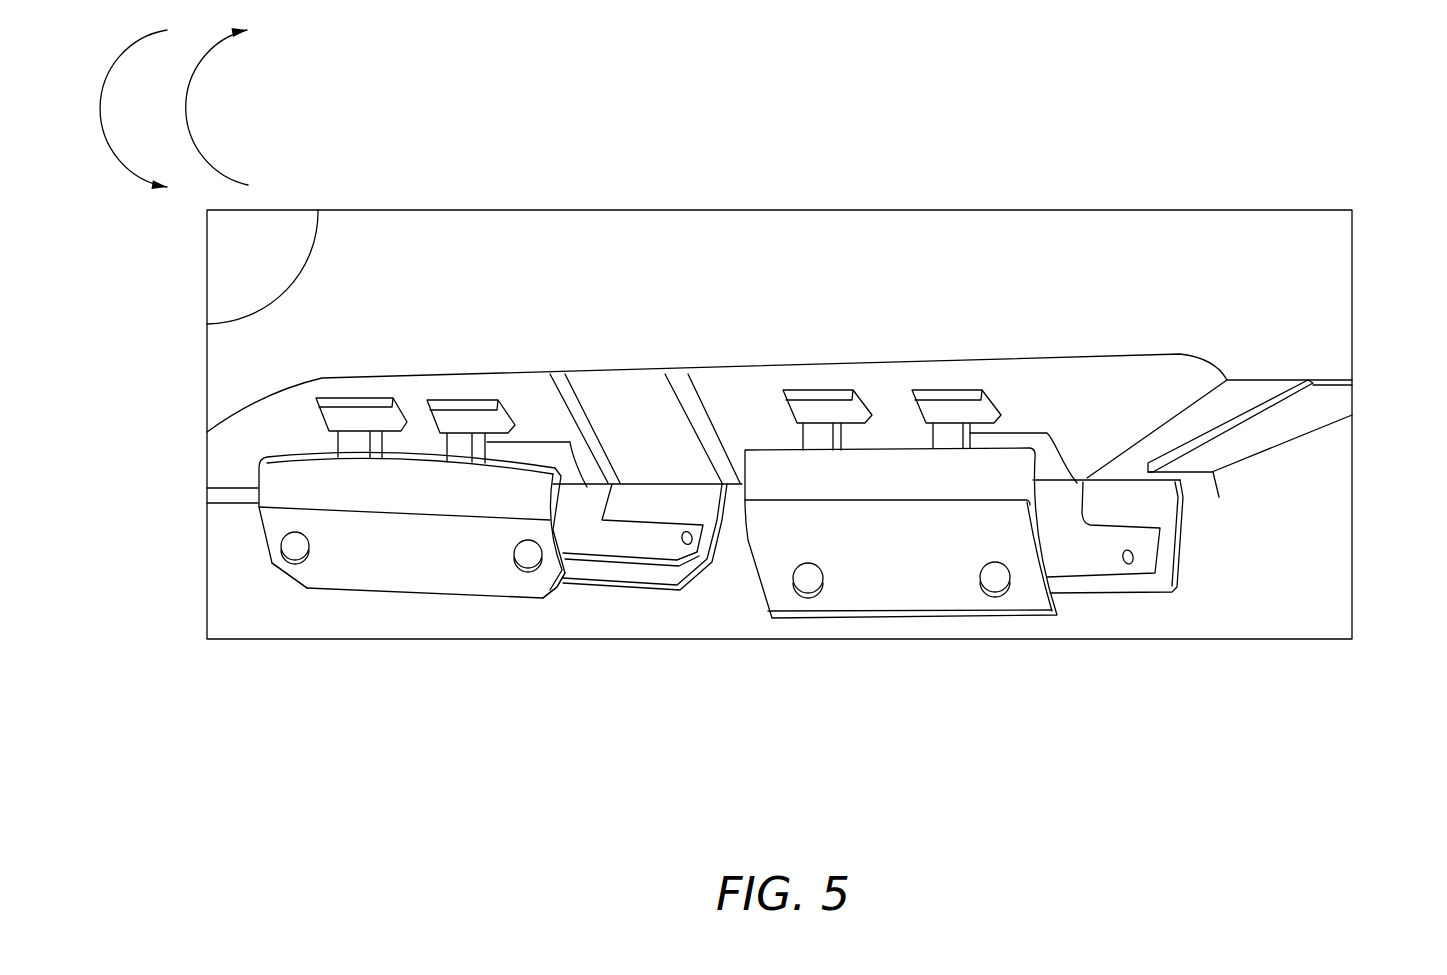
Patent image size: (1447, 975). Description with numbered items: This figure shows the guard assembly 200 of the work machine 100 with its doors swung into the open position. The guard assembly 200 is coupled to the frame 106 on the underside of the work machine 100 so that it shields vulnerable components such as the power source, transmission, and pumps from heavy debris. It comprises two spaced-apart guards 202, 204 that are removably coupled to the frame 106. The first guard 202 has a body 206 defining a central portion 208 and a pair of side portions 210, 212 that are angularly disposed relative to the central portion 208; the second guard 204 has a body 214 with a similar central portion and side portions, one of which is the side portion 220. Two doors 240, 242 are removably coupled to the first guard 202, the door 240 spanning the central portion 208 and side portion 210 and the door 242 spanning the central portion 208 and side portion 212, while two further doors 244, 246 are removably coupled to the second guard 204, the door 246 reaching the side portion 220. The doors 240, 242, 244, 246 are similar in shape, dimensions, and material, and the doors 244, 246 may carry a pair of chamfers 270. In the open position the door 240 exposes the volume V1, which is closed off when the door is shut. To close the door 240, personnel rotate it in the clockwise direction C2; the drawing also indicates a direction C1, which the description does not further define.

The work machine 100 is at (1276, 146).
The frame 106 is at (1065, 240).
The guard assembly 200 is at (1321, 440).
The guard 202 is at (1263, 433).
The guard 204 is at (233, 514).
The body 206 is at (1317, 398).
The central portion 208 is at (1241, 469).
The side portion 210 is at (1219, 497).
The side portion 212 is at (751, 428).
The body 214 is at (237, 453).
The side portion 220 is at (527, 400).
The door 240 is at (1163, 601).
The door 242 is at (885, 626).
The door 244 is at (422, 606).
The door 246 is at (658, 600).
The chamfers 270 is at (285, 580).
The volume V1 is at (570, 474).
The first rotation direction C1 is at (119, 109).
The clockwise direction C2 is at (197, 106).